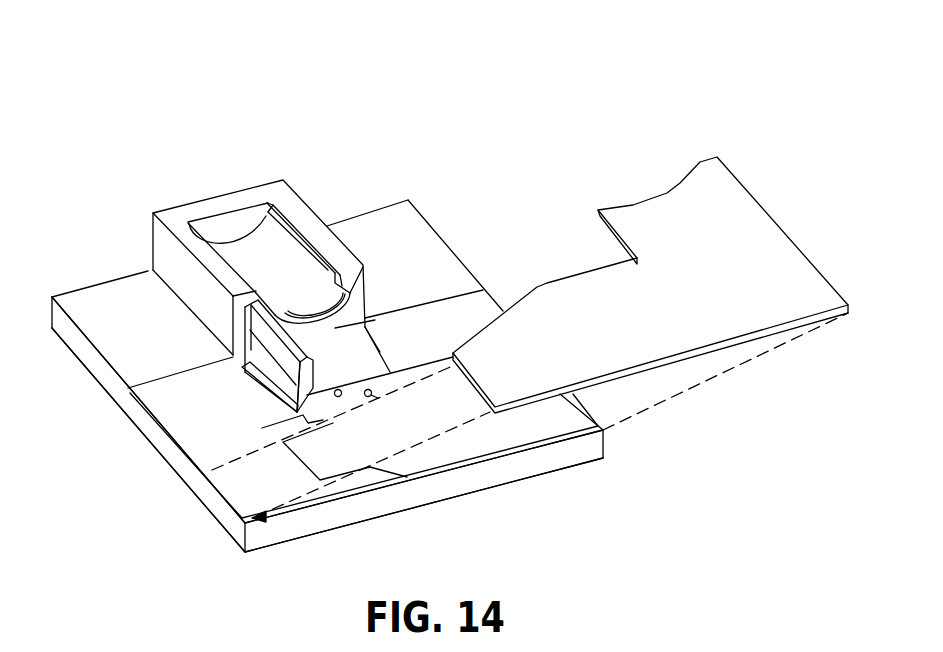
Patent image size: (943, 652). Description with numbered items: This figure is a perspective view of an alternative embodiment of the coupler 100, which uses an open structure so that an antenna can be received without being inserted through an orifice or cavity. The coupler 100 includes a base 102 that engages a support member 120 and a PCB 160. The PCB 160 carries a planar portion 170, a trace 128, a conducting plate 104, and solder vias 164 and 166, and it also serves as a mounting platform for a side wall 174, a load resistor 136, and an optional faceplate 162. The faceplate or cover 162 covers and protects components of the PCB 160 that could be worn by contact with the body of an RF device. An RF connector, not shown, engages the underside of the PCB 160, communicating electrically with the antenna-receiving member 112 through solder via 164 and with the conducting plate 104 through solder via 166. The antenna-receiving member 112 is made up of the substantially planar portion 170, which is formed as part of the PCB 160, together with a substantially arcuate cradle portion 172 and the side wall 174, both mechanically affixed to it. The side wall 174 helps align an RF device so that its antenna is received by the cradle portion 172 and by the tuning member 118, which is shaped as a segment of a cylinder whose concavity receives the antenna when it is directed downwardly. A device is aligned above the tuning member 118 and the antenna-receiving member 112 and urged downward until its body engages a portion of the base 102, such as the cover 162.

The coupler 100 is at (146, 102).
The base 102 is at (132, 297).
The conducting plate 104 is at (490, 445).
The antenna-receiving member 112 is at (386, 306).
The tuning member 118 is at (252, 253).
The support member 120 is at (277, 190).
The trace 128 is at (268, 412).
The load resistor 136 is at (272, 433).
The PCB 160 is at (165, 395).
The faceplate 162 is at (620, 300).
The solder via 164 is at (341, 396).
The solder via 166 is at (367, 390).
The planar portion 170 is at (360, 352).
The cradle portion 172 is at (352, 290).
The side wall 174 is at (268, 348).